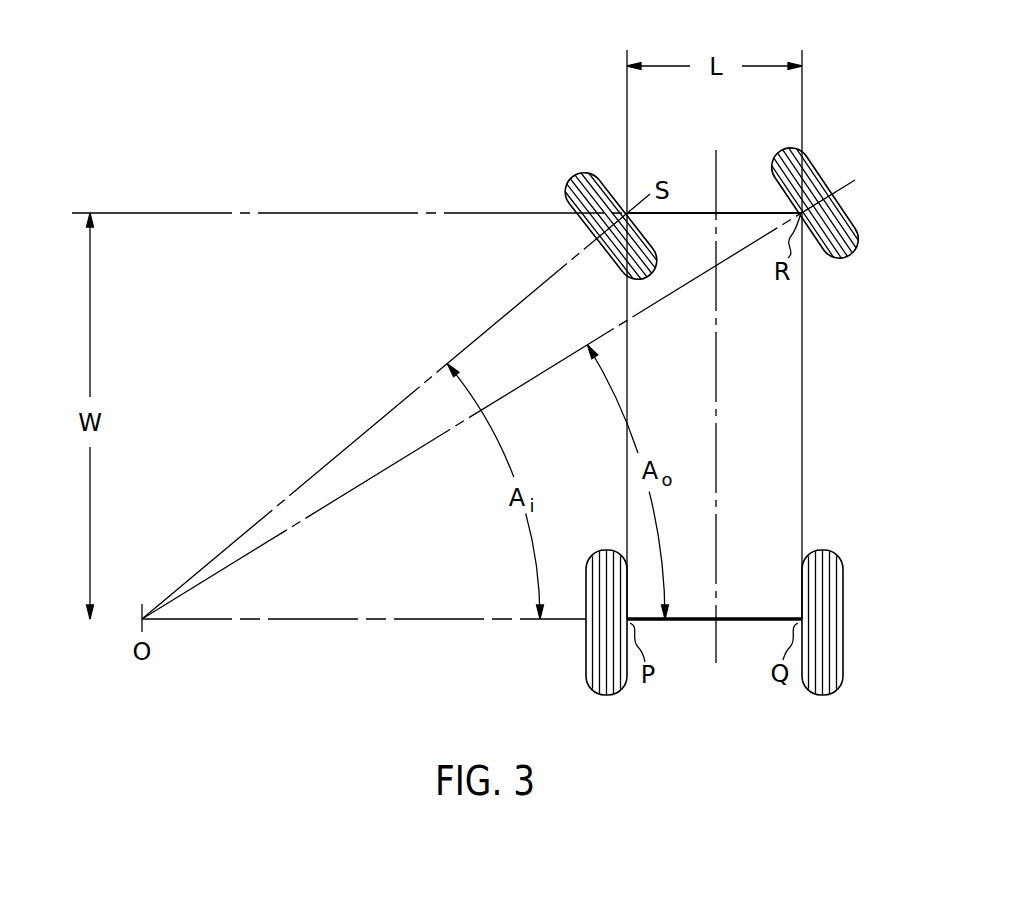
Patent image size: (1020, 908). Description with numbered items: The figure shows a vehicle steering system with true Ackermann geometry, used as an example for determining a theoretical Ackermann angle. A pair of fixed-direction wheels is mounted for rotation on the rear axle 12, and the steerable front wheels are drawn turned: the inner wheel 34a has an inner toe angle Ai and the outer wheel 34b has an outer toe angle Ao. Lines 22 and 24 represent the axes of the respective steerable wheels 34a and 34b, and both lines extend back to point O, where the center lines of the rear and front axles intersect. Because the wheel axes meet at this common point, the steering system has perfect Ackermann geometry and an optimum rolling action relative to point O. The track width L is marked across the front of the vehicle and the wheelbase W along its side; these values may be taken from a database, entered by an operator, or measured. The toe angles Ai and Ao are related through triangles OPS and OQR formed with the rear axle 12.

The rear axle 12 is at (750, 614).
The axis line of inner steerable wheel 22 is at (297, 490).
The axis line of outer steerable wheel 24 is at (348, 492).
The inner wheel 34a is at (563, 168).
The outer wheel 34b is at (820, 168).